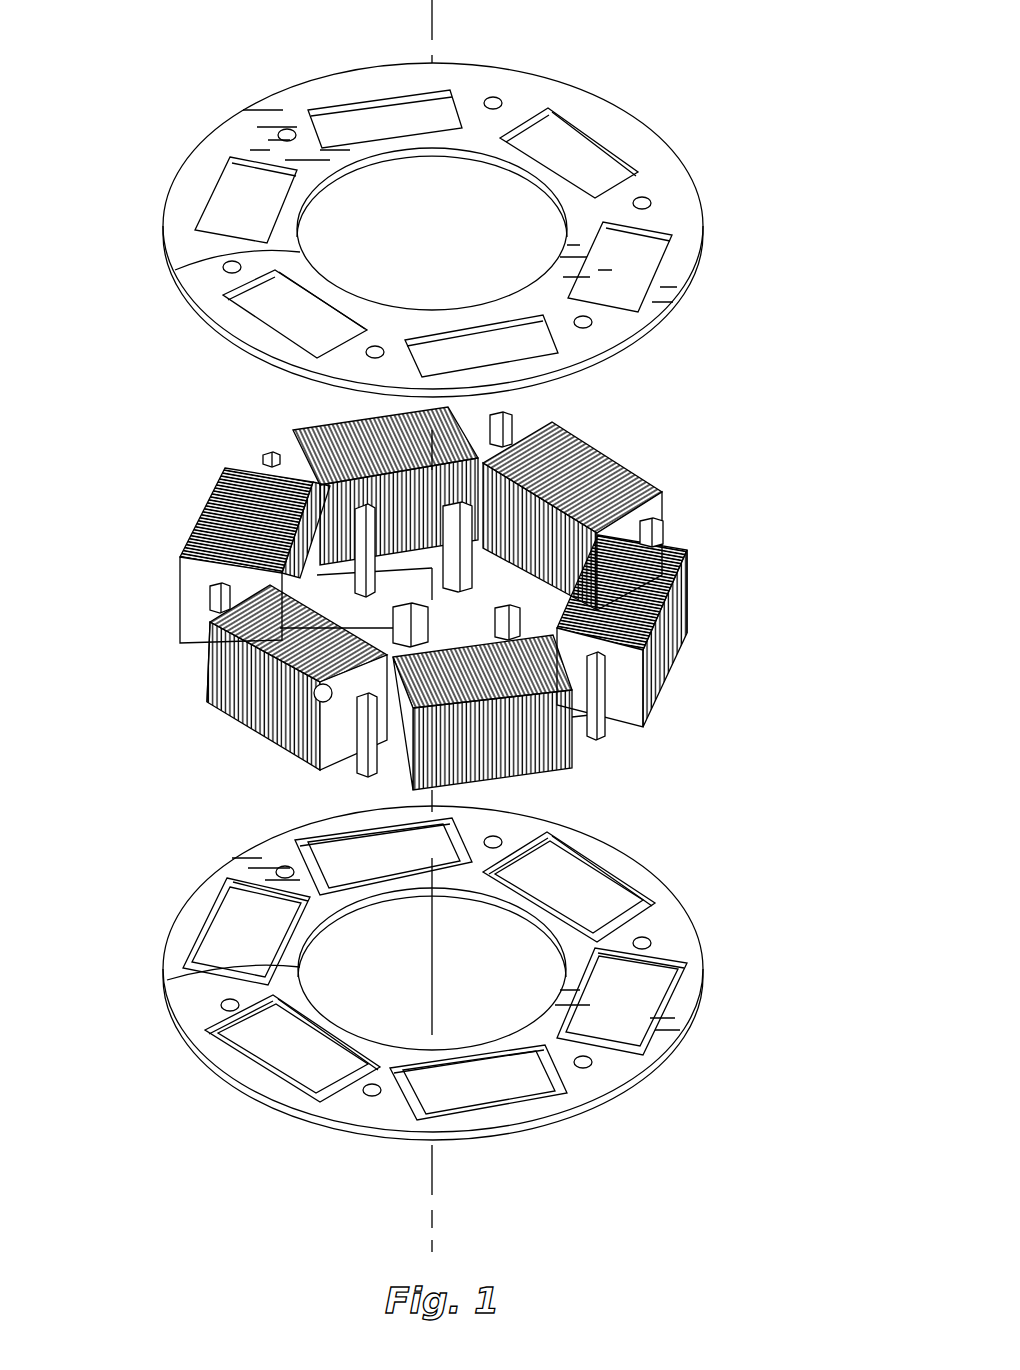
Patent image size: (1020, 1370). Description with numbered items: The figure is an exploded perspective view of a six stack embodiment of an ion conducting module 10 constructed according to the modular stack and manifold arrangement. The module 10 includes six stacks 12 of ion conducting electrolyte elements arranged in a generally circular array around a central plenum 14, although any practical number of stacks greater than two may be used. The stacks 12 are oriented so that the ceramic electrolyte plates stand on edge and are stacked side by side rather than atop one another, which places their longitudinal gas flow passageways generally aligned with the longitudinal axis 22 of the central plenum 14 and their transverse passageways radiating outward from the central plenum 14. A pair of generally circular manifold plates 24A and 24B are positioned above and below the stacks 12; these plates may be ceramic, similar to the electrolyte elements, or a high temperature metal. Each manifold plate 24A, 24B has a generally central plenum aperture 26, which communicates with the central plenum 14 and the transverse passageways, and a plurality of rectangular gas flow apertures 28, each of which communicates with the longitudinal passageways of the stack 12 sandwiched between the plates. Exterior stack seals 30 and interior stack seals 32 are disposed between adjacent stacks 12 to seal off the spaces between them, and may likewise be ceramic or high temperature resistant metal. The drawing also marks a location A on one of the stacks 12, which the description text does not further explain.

The ion conducting module 10 is at (617, 87).
The stacks 12 is at (245, 468).
The central plenum 14 is at (473, 632).
The longitudinal axis 22 is at (430, 2).
The manifold plate 24A is at (670, 178).
The manifold plate 24B is at (670, 930).
The central plenum aperture 26 is at (183, 262).
The rectangular gas flow apertures 28 is at (672, 248).
The exterior stack seals 30 is at (355, 777).
The interior stack seals 32 is at (210, 668).
The detail area A is at (318, 702).